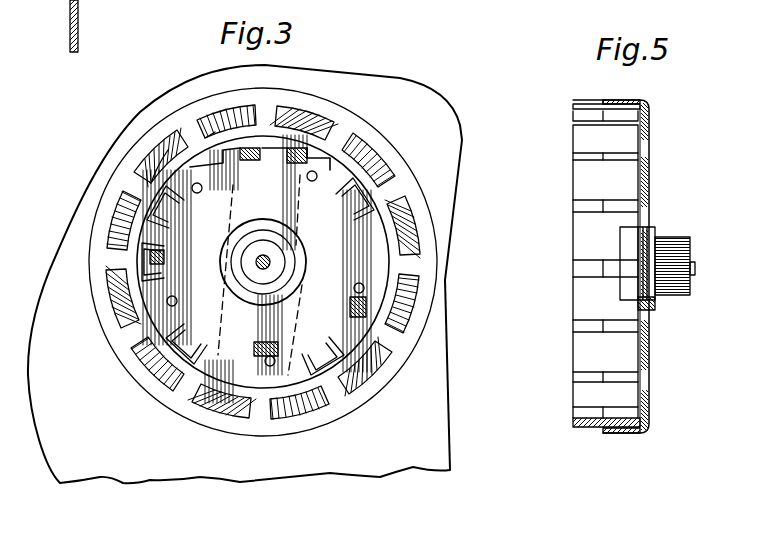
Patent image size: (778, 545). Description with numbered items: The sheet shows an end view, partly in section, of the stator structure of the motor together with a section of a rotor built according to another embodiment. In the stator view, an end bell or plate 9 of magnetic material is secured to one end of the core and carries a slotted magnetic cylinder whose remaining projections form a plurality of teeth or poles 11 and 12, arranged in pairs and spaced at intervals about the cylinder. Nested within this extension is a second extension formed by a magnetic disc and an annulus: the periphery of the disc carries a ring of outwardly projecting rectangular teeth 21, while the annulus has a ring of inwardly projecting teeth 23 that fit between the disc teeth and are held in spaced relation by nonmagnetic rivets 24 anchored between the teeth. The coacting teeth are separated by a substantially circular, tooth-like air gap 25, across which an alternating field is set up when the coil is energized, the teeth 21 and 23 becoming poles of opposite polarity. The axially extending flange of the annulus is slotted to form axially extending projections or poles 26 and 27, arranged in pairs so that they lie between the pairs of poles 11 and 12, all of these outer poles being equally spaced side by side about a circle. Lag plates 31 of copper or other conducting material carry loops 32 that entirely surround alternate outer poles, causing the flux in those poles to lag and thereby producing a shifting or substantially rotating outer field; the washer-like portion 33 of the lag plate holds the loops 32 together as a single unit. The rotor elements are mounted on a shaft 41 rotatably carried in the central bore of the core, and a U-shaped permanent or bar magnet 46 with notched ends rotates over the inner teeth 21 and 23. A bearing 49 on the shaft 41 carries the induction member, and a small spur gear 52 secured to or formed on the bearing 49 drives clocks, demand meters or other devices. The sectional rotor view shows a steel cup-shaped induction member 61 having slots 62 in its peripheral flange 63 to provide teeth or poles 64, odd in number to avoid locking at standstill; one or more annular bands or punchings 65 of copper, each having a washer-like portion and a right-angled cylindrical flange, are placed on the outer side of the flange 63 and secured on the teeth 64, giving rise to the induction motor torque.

In FIG. 3, the end bell or plate 9 is at (52, 252).
In FIG. 3, the teeth or poles 11 is at (303, 120).
In FIG. 3, the teeth or poles 12 is at (227, 113).
In FIG. 3, the outwardly projecting rectangular teeth 21 is at (337, 186).
In FIG. 3, the inwardly projecting teeth 23 is at (180, 345).
In FIG. 3, the nonmagnetic rivets 24 is at (200, 193).
In FIG. 3, the air gap 25 is at (163, 240).
In FIG. 3, the axially extending projections or poles 26 is at (131, 148).
In FIG. 3, the axially extending projections or poles 27 is at (377, 160).
In FIG. 3, the lag plates 31 is at (257, 97).
In FIG. 3, the loops 32 is at (213, 140).
In FIG. 3, the washer-like portion 33 is at (163, 142).
In FIG. 3, the shaft 41 is at (259, 264).
In FIG. 3, the U-shaped permanent or bar magnet 46 is at (287, 313).
In FIG. 5, the bearing 49 is at (640, 228).
In FIG. 5, the small spur gear 52 is at (688, 250).
In FIG. 5, the steel cup-shaped induction member 61 is at (646, 266).
In FIG. 5, the slots 62 is at (580, 381).
In FIG. 5, the peripheral flange 63 is at (598, 430).
In FIG. 5, the teeth or poles 64 is at (585, 142).
In FIG. 5, the annular bands or punchings 65 is at (615, 99).